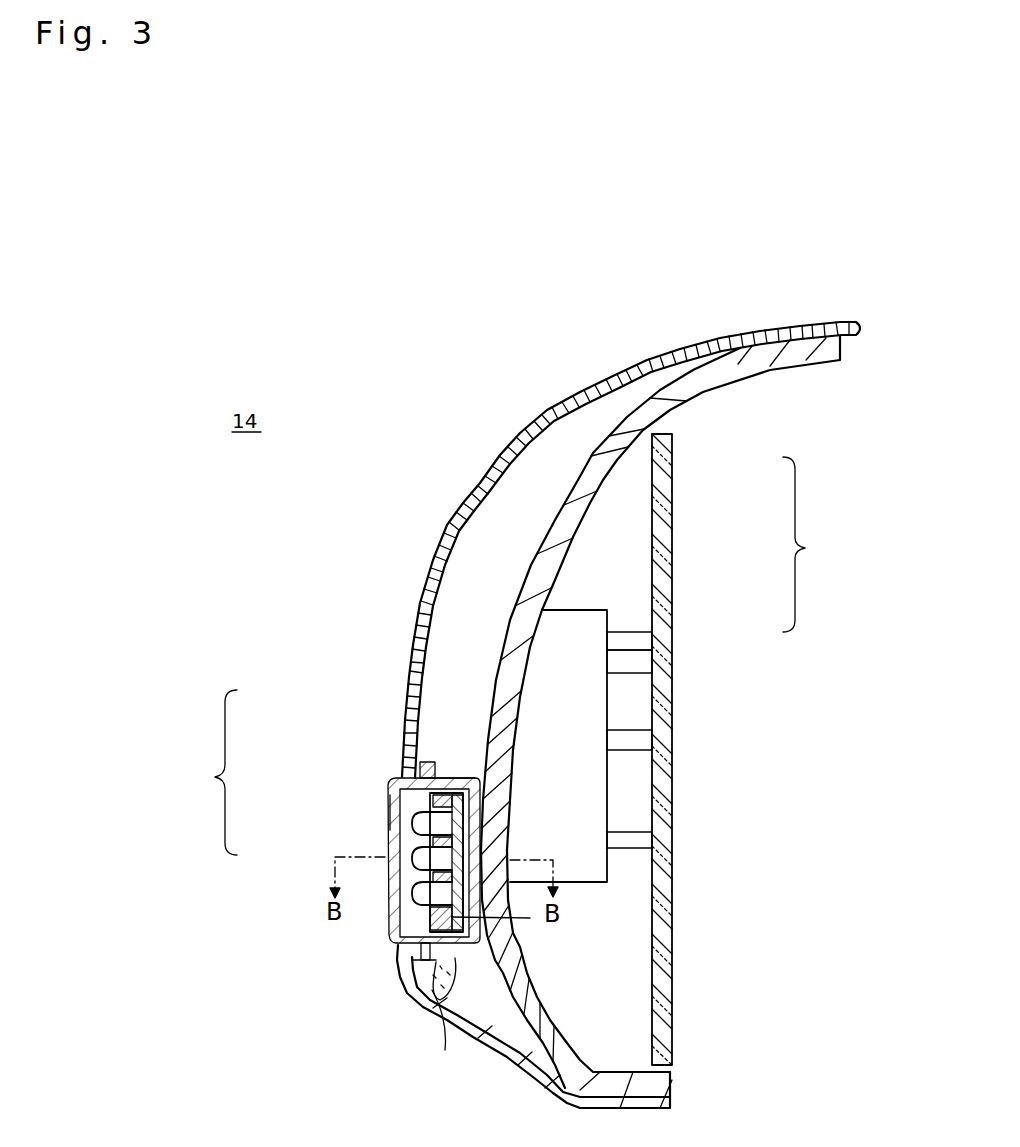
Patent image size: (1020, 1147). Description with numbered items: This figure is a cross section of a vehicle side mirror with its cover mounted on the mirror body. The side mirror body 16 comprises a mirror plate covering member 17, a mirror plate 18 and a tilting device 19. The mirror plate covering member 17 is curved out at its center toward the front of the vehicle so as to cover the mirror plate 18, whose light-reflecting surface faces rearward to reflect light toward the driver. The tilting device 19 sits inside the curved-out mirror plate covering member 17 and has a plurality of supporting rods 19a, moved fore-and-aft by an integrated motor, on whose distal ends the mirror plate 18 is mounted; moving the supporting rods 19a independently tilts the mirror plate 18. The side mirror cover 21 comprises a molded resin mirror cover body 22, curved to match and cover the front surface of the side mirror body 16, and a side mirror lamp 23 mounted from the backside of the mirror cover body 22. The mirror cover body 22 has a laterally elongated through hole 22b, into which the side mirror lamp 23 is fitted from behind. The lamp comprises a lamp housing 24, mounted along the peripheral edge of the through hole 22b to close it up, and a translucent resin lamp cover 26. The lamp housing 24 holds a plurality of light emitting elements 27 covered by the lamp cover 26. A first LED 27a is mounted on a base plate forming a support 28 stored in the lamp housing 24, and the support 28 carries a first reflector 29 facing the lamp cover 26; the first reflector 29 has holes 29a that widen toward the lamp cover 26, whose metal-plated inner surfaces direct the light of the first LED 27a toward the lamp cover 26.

The side mirror body 16 is at (811, 544).
The mirror plate covering member 17 is at (767, 367).
The mirror plate 18 is at (673, 530).
The tilting device 19 is at (545, 677).
The supporting rods 19a is at (635, 632).
The side mirror cover 21 is at (210, 772).
The mirror cover body 22 is at (404, 683).
The through hole 22b is at (388, 800).
The side mirror lamp 23 is at (378, 843).
The lamp housing 24 is at (448, 1035).
The lamp cover 26 is at (395, 935).
The light emitting elements 27 is at (400, 880).
The first LED 27a is at (390, 933).
The support 28 is at (475, 917).
The first reflector 29 is at (455, 777).
The holes 29a is at (428, 762).